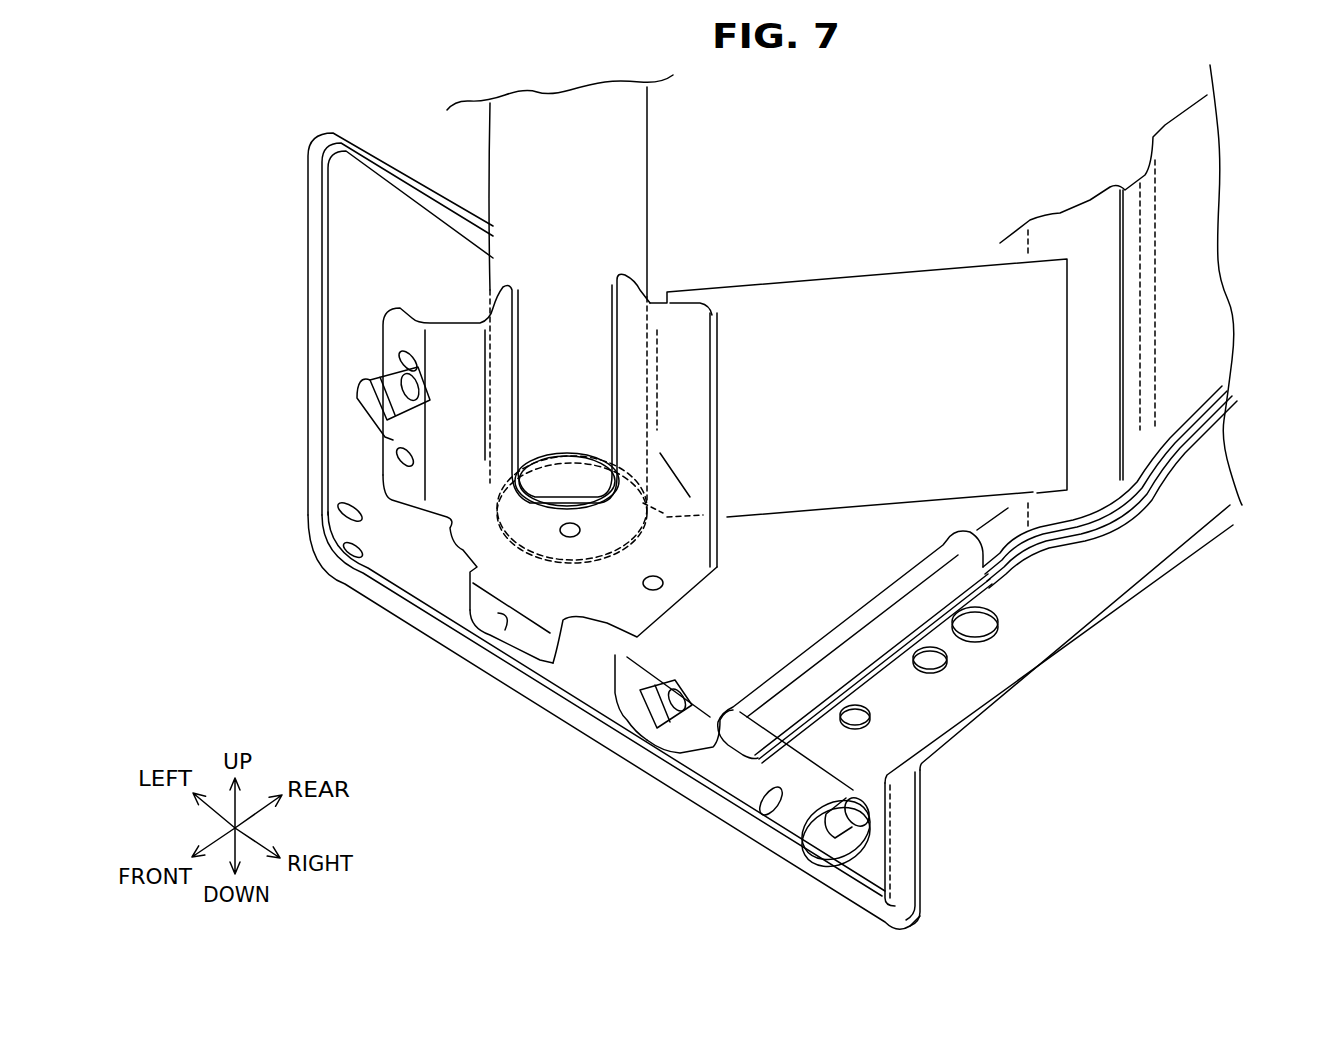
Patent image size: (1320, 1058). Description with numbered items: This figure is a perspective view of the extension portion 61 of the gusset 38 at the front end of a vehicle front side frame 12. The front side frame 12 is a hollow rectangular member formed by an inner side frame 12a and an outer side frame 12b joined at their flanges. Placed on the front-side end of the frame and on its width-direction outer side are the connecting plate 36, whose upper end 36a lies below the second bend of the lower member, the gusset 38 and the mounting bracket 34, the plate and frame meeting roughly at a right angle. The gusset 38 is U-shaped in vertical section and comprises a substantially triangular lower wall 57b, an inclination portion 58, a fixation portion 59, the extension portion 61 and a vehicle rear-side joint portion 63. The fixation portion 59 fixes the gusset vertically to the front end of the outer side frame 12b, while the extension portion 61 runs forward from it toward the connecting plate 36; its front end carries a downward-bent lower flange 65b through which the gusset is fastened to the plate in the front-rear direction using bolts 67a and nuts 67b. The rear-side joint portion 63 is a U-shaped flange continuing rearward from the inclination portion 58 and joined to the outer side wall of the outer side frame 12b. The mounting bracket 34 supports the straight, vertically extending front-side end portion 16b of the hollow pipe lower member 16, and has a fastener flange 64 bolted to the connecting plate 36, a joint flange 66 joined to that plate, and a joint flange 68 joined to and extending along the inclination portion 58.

The front side frame 12 is at (1164, 621).
The inner side frame 12a is at (1153, 540).
The outer side frame 12b is at (905, 545).
The lower member 16 is at (736, 295).
The vehicle front-side end portion 16b is at (667, 181).
The mounting bracket 34 is at (435, 565).
The connecting plate 36 is at (279, 371).
The upper end 36a is at (452, 200).
The gusset 38 is at (848, 249).
The lower wall 57b is at (985, 577).
The inclination portion 58 is at (918, 333).
The fixation portion 59 is at (830, 625).
The extension portion 61 is at (633, 660).
The vehicle rear-side joint portion 63 is at (1097, 360).
The fastener flange 64 is at (387, 440).
The lower flange 65b is at (673, 767).
The joint flange 66 is at (510, 617).
The bolt 67a is at (693, 760).
The nut 67b is at (650, 707).
The joint flange 68 is at (690, 390).